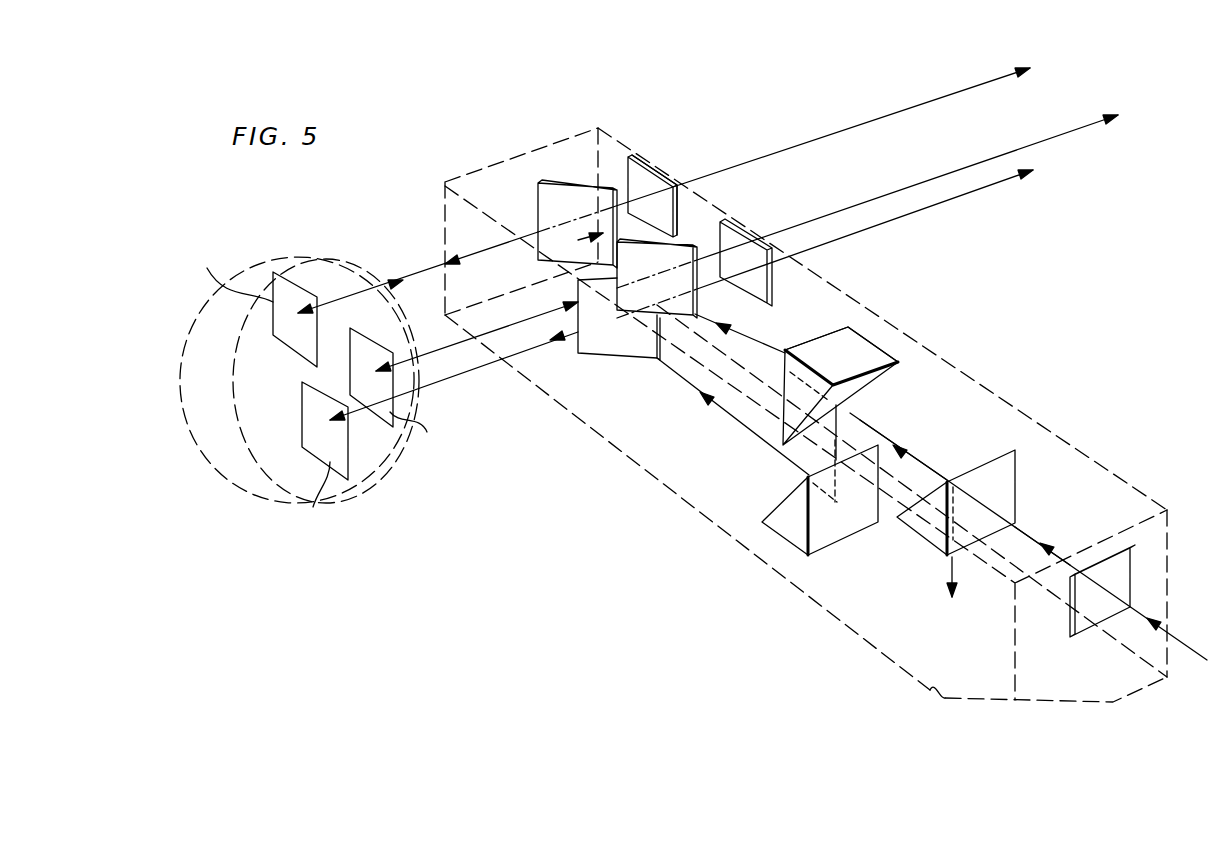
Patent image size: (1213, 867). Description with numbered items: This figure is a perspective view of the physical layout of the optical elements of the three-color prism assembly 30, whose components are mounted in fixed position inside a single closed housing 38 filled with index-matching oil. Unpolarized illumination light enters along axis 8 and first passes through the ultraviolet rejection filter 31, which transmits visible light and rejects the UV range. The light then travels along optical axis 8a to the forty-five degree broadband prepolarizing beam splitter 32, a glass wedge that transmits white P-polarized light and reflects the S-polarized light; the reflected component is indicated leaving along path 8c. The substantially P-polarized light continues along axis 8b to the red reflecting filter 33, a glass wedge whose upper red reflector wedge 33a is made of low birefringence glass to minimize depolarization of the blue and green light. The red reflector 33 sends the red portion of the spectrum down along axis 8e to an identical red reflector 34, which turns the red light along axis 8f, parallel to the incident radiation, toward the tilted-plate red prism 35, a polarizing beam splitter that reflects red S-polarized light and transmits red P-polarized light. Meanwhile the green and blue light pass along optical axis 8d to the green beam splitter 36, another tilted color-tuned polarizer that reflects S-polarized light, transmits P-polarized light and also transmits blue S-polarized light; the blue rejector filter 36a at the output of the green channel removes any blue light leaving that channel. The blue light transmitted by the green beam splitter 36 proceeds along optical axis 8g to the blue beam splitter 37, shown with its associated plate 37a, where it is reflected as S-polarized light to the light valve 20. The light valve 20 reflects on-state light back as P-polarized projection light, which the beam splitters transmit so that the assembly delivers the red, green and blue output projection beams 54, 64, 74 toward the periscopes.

The axis 8 is at (1173, 636).
The optical axis 8a is at (1017, 537).
The axis 8b is at (910, 458).
The beam portion 8c is at (948, 570).
The optical axis 8d is at (768, 355).
The axis 8e is at (836, 452).
The axis 8f is at (737, 423).
The optical axis 8g is at (578, 240).
The light valve 20 is at (316, 258).
The prism assembly 30 is at (520, 140).
The ultraviolet rejection filter 31 is at (1123, 577).
The prepolarizing beam splitter 32 is at (1003, 478).
The red reflecting filter 33 is at (873, 383).
The upper red reflector wedge 33a is at (868, 348).
The red reflector 34 is at (830, 535).
The red prism 35 is at (610, 347).
The green beam splitter 36 is at (697, 307).
The blue rejector filter 36a is at (768, 290).
The blue beam splitter 37 is at (538, 195).
The filter 37a is at (652, 165).
The housing 38 is at (625, 143).
The output projection beam 54 is at (1000, 183).
The output projection beam 64 is at (1038, 140).
The output projection beam 74 is at (977, 85).